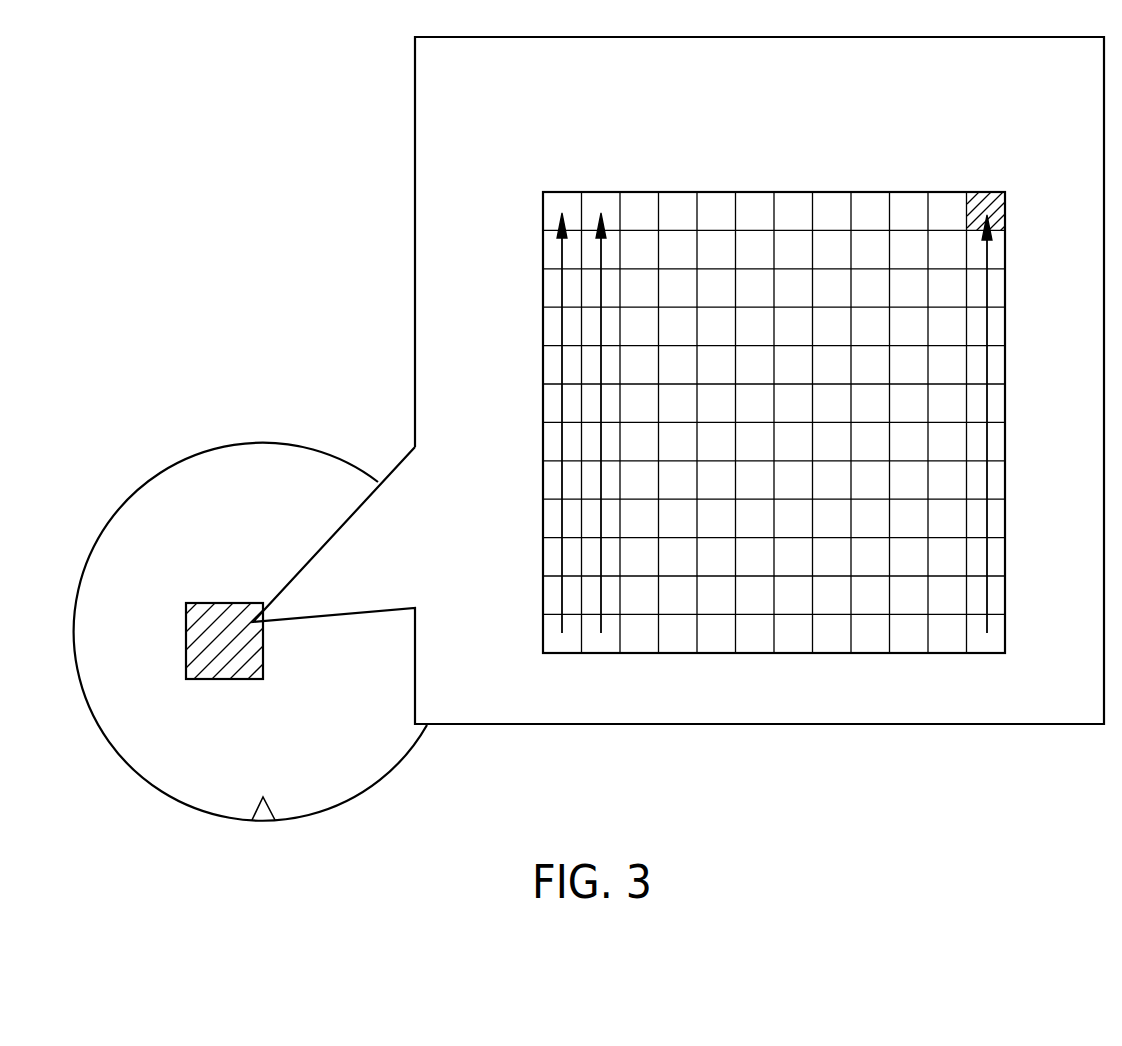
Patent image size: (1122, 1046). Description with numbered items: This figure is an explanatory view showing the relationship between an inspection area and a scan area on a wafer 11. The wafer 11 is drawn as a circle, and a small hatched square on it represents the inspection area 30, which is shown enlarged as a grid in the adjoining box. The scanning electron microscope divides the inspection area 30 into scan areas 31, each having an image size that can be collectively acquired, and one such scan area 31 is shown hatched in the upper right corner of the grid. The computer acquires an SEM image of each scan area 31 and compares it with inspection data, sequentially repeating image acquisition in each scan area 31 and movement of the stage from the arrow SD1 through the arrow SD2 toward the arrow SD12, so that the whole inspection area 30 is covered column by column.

The wafer 11 is at (250, 468).
The inspection area 30 is at (215, 600).
The scan area 31 is at (978, 195).
The arrow SD1 is at (562, 518).
The arrow SD2 is at (600, 605).
The arrow SD12 is at (987, 600).